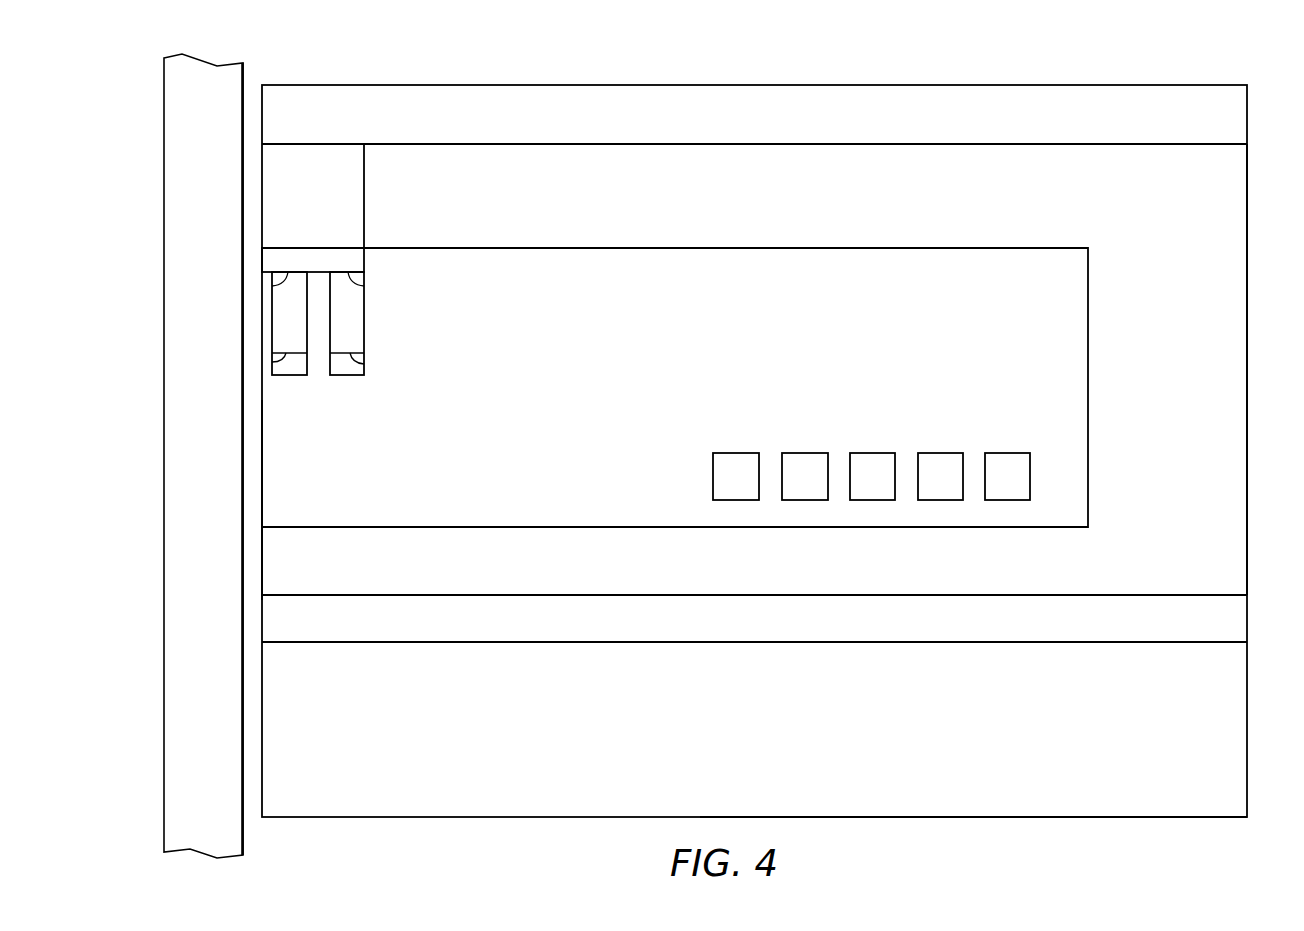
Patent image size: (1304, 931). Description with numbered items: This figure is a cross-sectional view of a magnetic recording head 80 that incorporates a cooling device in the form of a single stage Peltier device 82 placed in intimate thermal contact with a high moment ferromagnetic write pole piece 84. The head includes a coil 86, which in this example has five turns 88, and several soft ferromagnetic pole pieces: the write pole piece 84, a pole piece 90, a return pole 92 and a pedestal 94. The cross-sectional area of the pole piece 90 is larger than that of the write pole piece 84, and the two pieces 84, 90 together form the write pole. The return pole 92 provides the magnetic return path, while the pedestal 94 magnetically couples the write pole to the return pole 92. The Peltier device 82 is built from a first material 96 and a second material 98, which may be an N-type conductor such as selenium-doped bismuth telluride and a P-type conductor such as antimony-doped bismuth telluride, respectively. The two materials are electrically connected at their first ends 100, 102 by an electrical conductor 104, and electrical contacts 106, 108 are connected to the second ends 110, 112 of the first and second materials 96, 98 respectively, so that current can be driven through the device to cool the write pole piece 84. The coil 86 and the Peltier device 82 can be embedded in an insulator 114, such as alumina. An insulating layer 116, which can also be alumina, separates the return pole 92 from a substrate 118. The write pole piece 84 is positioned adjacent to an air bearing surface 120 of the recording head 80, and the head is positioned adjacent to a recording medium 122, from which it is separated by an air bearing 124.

The magnetic recording head 80 is at (1166, 85).
The single stage Peltier device 82 is at (422, 250).
The high moment ferromagnetic write pole piece 84 is at (313, 148).
The coil 86 is at (881, 411).
The turns 88 is at (1007, 492).
The pole piece 90 is at (702, 165).
The return pole 92 is at (577, 575).
The pedestal 94 is at (1235, 256).
The first material 96 is at (280, 333).
The second material 98 is at (358, 335).
The first end 100 is at (274, 288).
The first end 102 is at (347, 275).
The electrical conductor 104 is at (273, 259).
The electrical contact 106 is at (290, 375).
The electrical contact 108 is at (350, 375).
The second end 110 is at (272, 365).
The second end 112 is at (352, 362).
The insulator 114 is at (975, 268).
The insulating layer 116 is at (1047, 628).
The substrate 118 is at (1017, 805).
The air bearing surface 120 is at (262, 497).
The recording medium 122 is at (170, 746).
The air bearing 124 is at (250, 810).